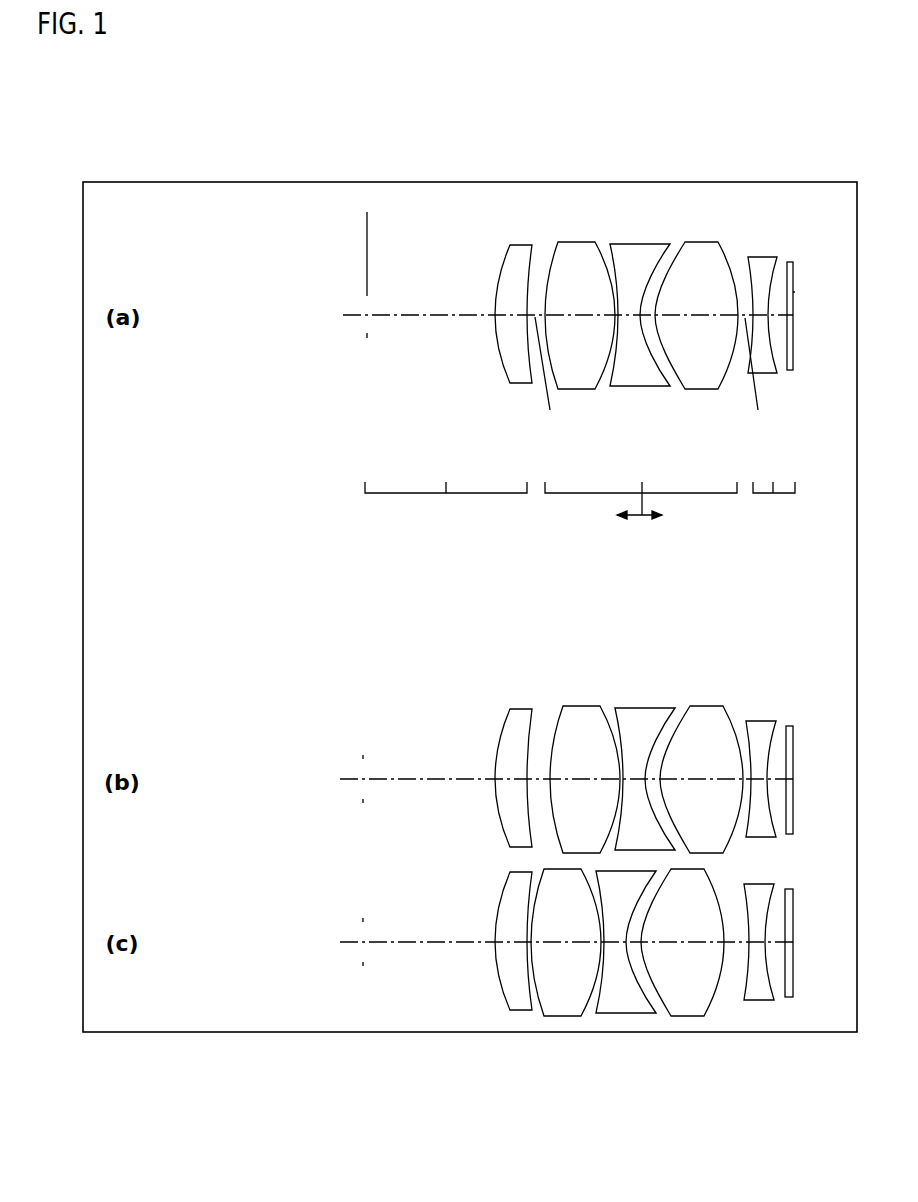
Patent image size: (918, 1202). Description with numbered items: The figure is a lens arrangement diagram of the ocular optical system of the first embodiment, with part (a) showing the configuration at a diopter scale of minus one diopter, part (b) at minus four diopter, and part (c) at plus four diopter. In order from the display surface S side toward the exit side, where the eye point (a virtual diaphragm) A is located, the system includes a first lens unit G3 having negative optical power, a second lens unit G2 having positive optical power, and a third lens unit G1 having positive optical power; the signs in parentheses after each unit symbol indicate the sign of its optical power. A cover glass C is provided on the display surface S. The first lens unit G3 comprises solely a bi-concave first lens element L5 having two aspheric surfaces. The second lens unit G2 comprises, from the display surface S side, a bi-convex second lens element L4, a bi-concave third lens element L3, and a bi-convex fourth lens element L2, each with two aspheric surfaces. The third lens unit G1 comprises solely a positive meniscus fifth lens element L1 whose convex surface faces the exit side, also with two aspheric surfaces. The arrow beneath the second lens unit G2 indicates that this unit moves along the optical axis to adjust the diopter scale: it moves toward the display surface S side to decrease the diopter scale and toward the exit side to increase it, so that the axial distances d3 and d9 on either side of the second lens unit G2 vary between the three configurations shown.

The eye point A is at (368, 265).
The fifth lens element L1 is at (520, 250).
The fourth lens element L2 is at (578, 250).
The third lens element L3 is at (638, 250).
The second lens element L4 is at (700, 248).
The first lens element L5 is at (762, 262).
The cover glass C is at (789, 262).
The display surface S is at (795, 292).
The axial distance d3 is at (545, 374).
The axial distance d9 is at (755, 375).
The third lens unit G1 is at (446, 476).
The second lens unit G2 is at (641, 489).
The first lens unit G3 is at (775, 476).